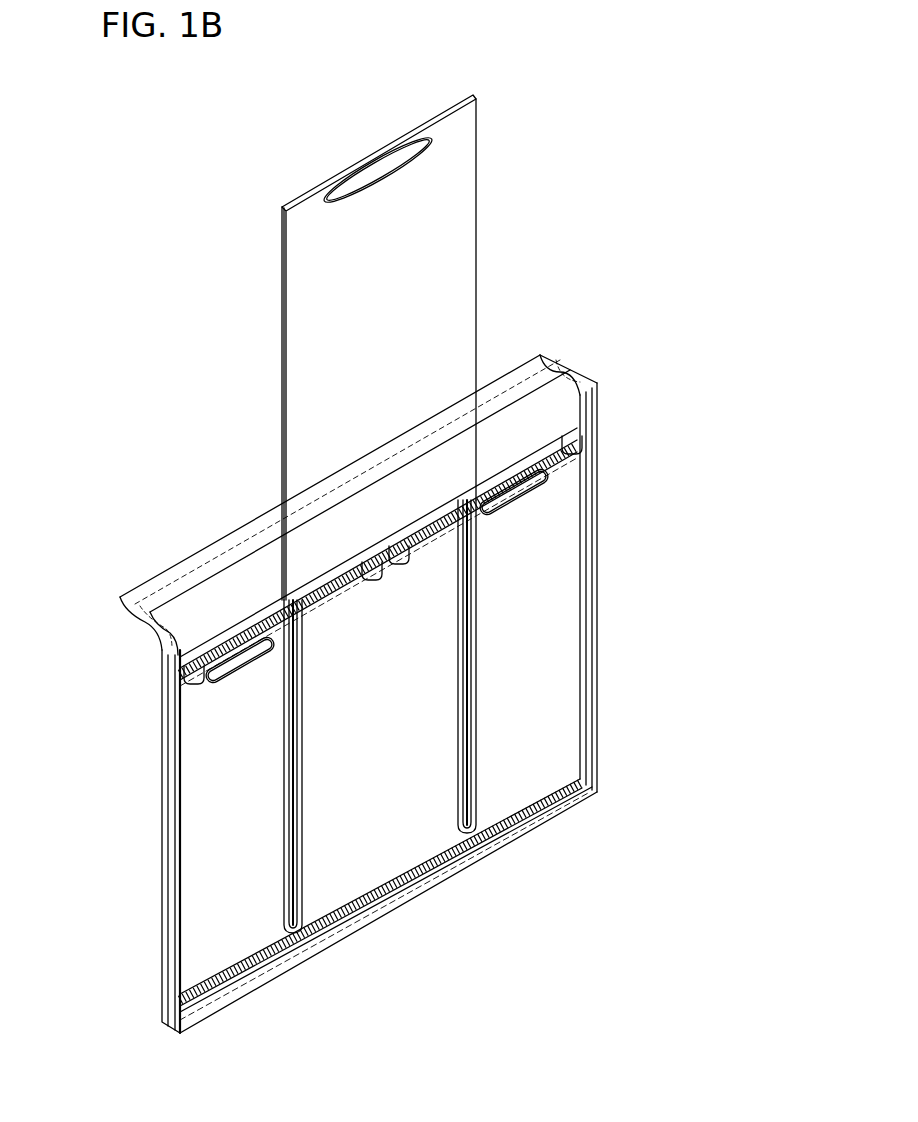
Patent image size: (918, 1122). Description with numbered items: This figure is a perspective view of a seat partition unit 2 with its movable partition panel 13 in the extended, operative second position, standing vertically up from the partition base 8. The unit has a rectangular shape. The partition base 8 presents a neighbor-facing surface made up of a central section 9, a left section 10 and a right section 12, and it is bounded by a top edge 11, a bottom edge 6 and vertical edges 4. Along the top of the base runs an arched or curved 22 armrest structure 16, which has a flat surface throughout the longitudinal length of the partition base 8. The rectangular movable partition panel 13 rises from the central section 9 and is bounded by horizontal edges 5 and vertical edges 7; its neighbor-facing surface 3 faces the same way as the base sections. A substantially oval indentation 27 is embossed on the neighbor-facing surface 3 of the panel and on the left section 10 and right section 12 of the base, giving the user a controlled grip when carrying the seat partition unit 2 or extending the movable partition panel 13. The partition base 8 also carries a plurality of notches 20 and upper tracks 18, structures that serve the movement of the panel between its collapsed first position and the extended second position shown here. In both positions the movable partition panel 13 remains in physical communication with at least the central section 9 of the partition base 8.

The seat partition unit 2 is at (557, 248).
The neighbor-facing surface 3 is at (316, 302).
The vertical edges 4 is at (165, 890).
The horizontal edges 5 is at (307, 174).
The bottom edge 6 is at (446, 894).
The vertical edges 7 is at (266, 230).
The partition base 8 is at (91, 830).
The central section 9 is at (354, 837).
The left section 10 is at (537, 764).
The top edge 11 is at (139, 593).
The right section 12 is at (221, 935).
The movable partition panel 13 is at (218, 386).
The armrest structure 16 is at (502, 382).
The upper tracks 18 is at (235, 616).
The notches 20 is at (414, 544).
The arched or curved portion 22 is at (138, 641).
The oval indentation 27 is at (386, 153).